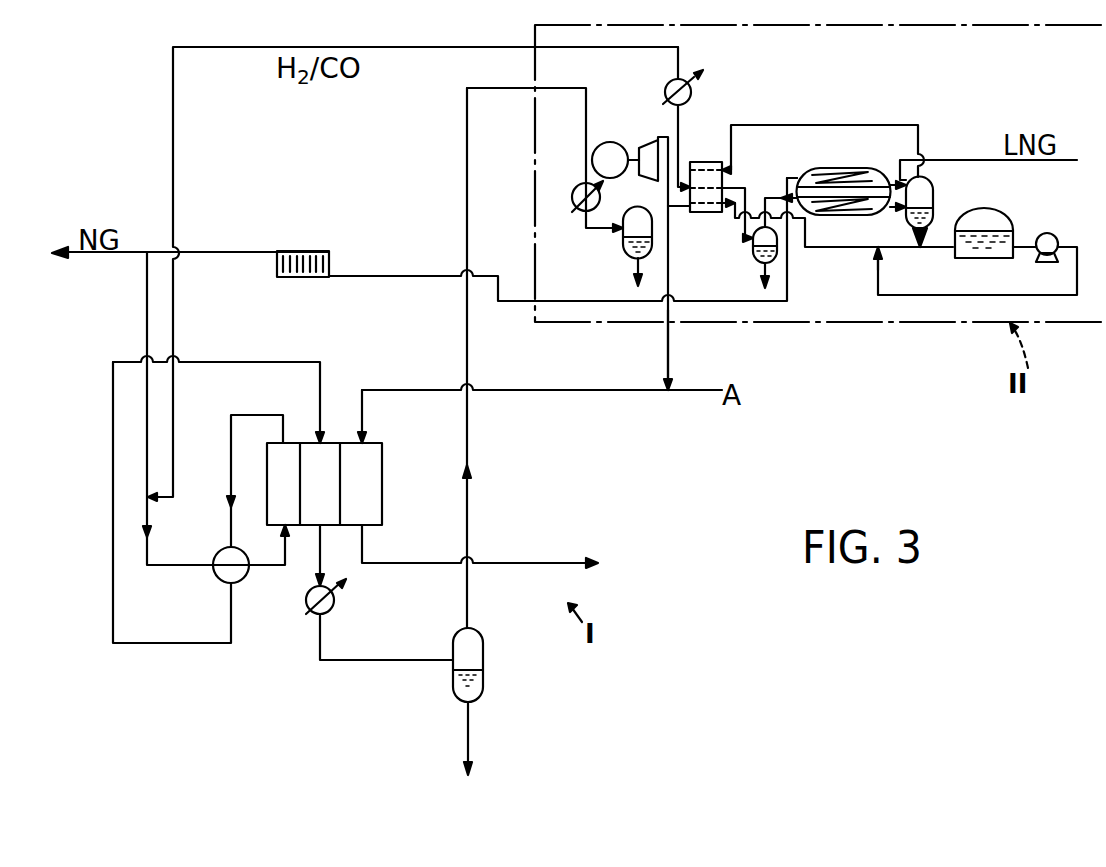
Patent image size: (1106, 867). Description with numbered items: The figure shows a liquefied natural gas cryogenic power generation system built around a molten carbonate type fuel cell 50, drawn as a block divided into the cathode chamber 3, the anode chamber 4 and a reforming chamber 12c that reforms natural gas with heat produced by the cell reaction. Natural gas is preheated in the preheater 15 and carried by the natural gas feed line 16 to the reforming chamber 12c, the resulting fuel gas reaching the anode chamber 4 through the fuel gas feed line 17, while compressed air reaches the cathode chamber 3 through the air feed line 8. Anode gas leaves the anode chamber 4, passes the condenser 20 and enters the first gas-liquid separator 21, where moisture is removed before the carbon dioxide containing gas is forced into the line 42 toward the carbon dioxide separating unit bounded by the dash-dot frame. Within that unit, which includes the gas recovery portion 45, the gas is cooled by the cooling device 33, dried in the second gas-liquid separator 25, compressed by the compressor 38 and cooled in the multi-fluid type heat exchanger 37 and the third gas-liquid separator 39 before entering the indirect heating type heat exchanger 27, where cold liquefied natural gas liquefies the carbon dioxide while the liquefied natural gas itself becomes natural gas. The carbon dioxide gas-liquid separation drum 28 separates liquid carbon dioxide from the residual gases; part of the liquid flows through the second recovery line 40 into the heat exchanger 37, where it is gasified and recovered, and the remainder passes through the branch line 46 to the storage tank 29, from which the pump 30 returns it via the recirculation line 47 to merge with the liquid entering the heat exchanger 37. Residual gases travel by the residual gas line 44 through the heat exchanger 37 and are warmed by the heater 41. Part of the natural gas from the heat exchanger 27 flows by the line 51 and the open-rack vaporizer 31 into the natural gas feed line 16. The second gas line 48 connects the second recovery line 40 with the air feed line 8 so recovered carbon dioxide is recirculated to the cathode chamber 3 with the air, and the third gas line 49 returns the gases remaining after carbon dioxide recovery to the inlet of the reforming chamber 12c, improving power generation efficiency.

The cathode chamber 3 is at (382, 500).
The anode chamber 4 is at (330, 445).
The air feed line 8 is at (563, 390).
The reforming chamber 12c is at (290, 443).
The preheater 15 is at (218, 583).
The natural gas feed line 16 is at (260, 565).
The fuel gas feed line 17 is at (257, 362).
The condenser 20 is at (310, 617).
The first gas-liquid separator 21 is at (483, 683).
The second gas-liquid separator 25 is at (628, 258).
The indirect heating type heat exchanger 27 is at (830, 168).
The CO2 gas-liquid separation drum 28 is at (933, 205).
The storage tank 29 is at (993, 227).
The pump 30 is at (1050, 233).
The open-rack vaporizer 31 is at (318, 251).
The cooling device 33 is at (583, 194).
The multi-fluid type heat exchanger 37 is at (706, 162).
The compressor 38 is at (648, 147).
The third gas-liquid separator 39 is at (754, 258).
The second recovery line 40 is at (830, 247).
The heater 41 is at (694, 87).
The line 42 is at (586, 98).
The residual gas line 44 is at (889, 125).
The gas recovery portion 45 is at (842, 316).
The branch line 46 is at (940, 247).
The recirculation line 47 is at (980, 295).
The second gas line 48 is at (669, 362).
The third gas line 49 is at (173, 104).
The molten carbonate type fuel cell 50 is at (355, 376).
The line 51 is at (750, 302).